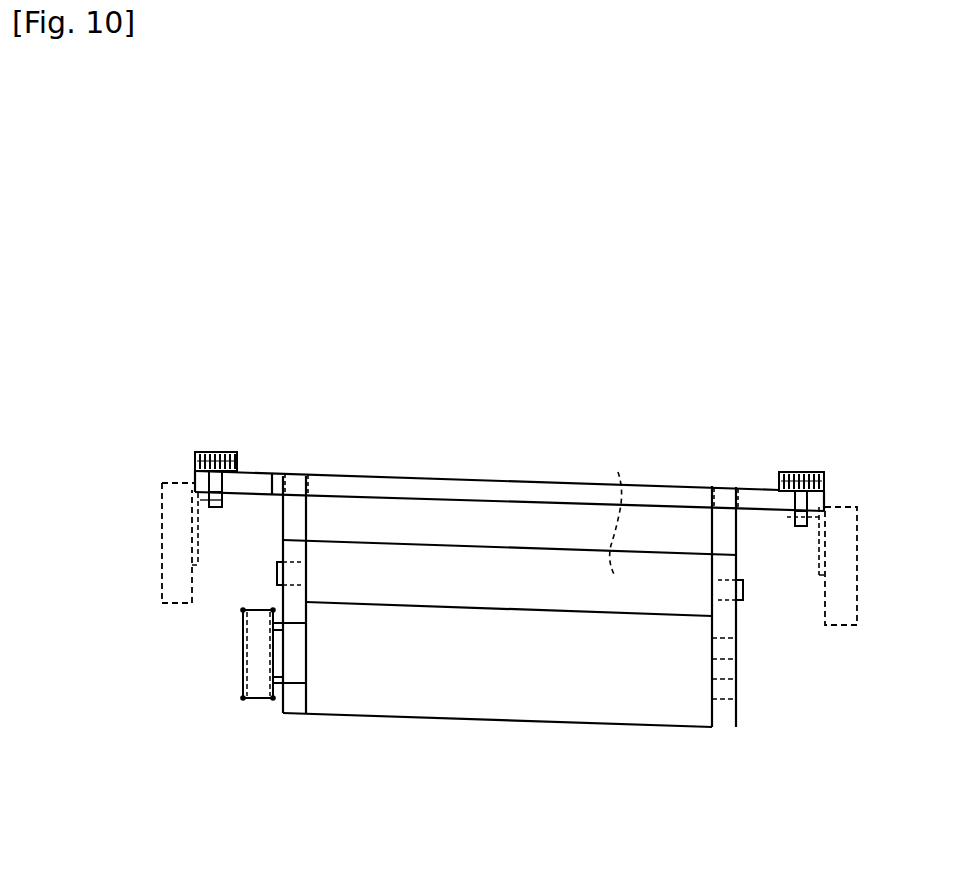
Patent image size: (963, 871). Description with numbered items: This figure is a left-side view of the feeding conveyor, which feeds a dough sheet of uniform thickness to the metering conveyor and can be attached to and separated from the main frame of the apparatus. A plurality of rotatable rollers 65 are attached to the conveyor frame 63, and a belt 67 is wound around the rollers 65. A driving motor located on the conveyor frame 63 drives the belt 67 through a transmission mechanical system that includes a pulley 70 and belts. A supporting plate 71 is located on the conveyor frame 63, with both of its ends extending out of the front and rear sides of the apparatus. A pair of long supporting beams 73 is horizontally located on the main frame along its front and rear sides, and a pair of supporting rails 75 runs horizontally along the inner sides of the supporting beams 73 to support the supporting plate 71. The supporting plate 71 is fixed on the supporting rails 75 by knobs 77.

The conveyor frame 63 is at (743, 668).
The rollers 65 is at (510, 506).
The belt 67 is at (672, 720).
The pulley 70 is at (258, 698).
The supporting plates 71 is at (472, 485).
The supporting beams 73 is at (172, 603).
The supporting rails 75 is at (200, 537).
The knobs 77 is at (230, 452).